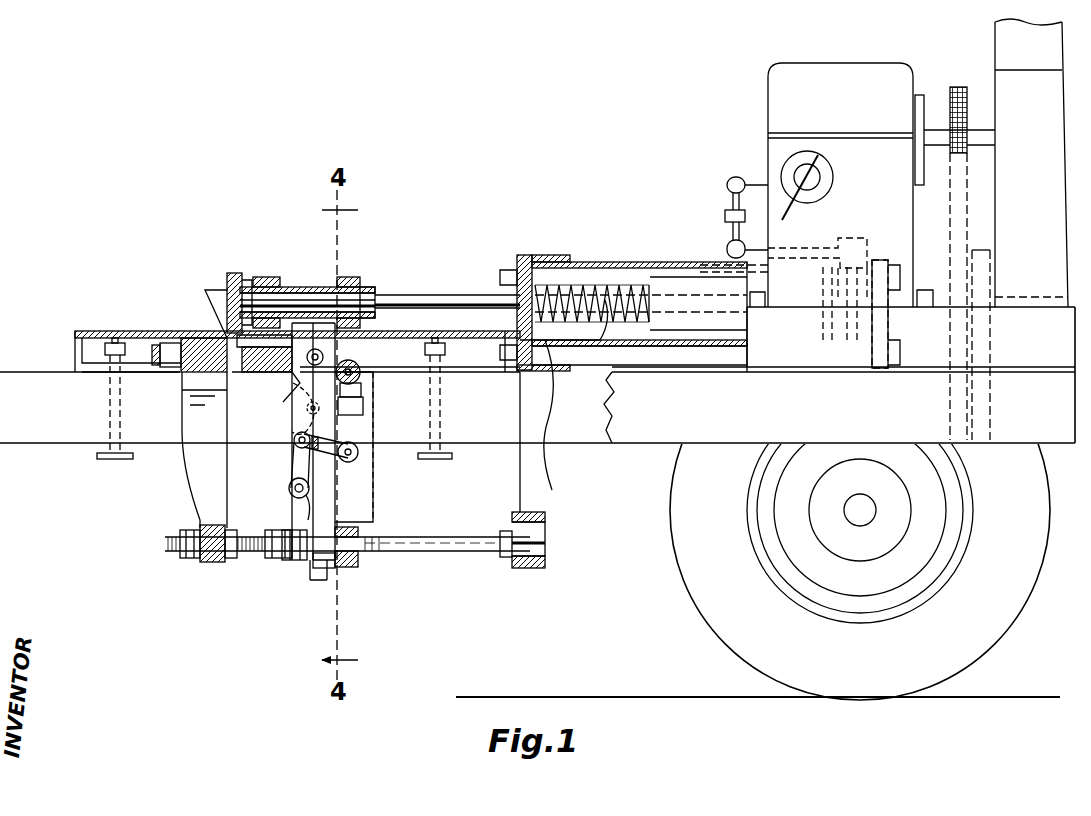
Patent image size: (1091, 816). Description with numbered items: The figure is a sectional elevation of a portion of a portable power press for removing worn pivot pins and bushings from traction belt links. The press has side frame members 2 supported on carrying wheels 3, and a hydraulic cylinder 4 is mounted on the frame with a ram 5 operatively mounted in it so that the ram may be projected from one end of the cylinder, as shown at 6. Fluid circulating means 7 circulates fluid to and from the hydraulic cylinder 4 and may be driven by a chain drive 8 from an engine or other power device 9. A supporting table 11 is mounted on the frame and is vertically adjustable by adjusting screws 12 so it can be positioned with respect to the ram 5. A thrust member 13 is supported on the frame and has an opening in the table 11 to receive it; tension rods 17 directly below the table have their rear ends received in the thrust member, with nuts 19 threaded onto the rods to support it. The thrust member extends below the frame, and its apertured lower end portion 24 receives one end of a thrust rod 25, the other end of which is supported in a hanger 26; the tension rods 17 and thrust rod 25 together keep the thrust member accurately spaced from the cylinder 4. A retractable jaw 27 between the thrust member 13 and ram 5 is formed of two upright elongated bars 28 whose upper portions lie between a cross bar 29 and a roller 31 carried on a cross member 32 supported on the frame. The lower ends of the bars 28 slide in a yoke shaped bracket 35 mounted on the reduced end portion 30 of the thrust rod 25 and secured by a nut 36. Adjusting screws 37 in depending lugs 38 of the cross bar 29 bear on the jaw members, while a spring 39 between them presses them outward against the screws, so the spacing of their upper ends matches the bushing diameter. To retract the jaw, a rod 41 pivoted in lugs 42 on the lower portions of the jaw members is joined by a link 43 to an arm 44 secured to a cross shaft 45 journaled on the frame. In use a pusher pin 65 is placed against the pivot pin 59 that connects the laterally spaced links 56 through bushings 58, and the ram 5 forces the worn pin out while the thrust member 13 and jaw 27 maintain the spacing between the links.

The side frame members 2 is at (648, 437).
The carrying wheels 3 is at (735, 625).
The hydraulic cylinder 4 is at (612, 265).
The ram 5 is at (590, 287).
The ram projection end 6 is at (520, 282).
The fluid circulating means 7 is at (785, 100).
The chain drive 8 is at (915, 153).
The engine 9 is at (1032, 248).
The supporting table 11 is at (130, 333).
The adjusting screws 12 is at (112, 459).
The thrust member 13 is at (205, 295).
The tension rods 17 is at (155, 358).
The nuts 19 is at (172, 345).
The lower end portion 24 is at (207, 565).
The thrust rod 25 is at (462, 555).
The hanger 26 is at (540, 488).
The retractable jaw 27 is at (305, 312).
The upright elongated bars 28 is at (330, 509).
The cross bar 29 is at (280, 345).
The reduced end portion 30 is at (322, 572).
The roller 31 is at (352, 362).
The cross member 32 is at (362, 393).
The yoke shaped bracket 35 is at (352, 565).
The nut 36 is at (296, 568).
The adjusting screws 37 is at (298, 430).
The depending lugs 38 is at (306, 410).
The spring 39 is at (283, 402).
The rod 41 is at (290, 492).
The lugs 42 is at (306, 500).
The link 43 is at (292, 465).
The arm 44 is at (325, 453).
The cross shaft 45 is at (358, 456).
The links 56 is at (278, 280).
The bushings 58 is at (313, 326).
The pivot pins 59 is at (366, 297).
The pusher pin 65 is at (420, 300).